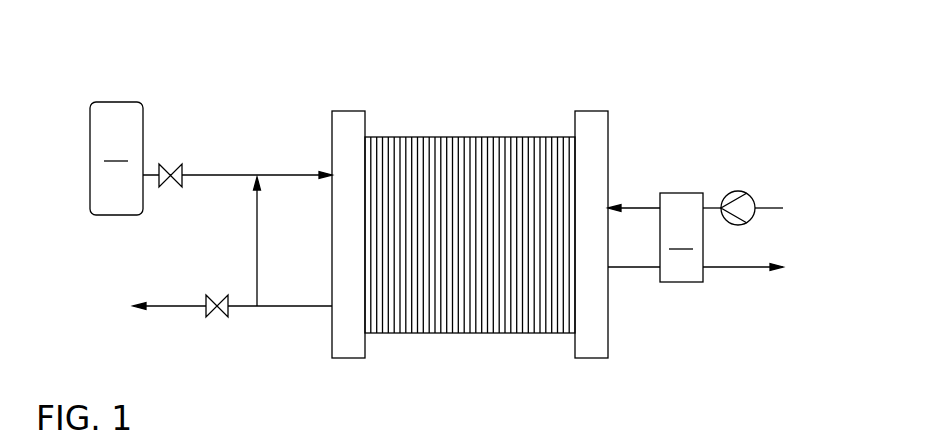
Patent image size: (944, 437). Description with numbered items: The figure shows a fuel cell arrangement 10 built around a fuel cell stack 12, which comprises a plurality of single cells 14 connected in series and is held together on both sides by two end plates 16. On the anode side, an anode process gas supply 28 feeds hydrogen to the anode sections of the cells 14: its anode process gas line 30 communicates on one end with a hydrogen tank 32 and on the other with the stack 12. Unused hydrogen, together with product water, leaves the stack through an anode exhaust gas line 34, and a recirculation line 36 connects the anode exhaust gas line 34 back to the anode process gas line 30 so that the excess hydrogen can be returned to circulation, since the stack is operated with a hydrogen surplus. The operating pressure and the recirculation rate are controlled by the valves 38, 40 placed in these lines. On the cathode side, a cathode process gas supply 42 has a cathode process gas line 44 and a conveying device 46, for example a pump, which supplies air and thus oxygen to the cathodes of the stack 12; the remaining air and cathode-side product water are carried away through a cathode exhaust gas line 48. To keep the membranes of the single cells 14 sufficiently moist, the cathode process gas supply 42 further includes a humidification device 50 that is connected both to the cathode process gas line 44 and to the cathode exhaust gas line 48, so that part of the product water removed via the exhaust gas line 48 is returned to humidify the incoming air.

The fuel cell arrangement 10 is at (544, 85).
The fuel cell stack 12 is at (399, 102).
The single cells 14 is at (438, 313).
The end plates 16 is at (598, 131).
The anode process gas supply 28 is at (178, 89).
The anode process gas line 30 is at (232, 175).
The hydrogen tank 32 is at (116, 158).
The anode exhaust gas line 34 is at (180, 306).
The recirculation line 36 is at (257, 243).
The valve 38 is at (177, 180).
The valve 40 is at (224, 308).
The cathode process gas supply 42 is at (724, 148).
The cathode process gas line 44 is at (643, 208).
The conveying device 46 is at (743, 203).
The cathode exhaust gas line 48 is at (637, 267).
The humidification device 50 is at (681, 237).